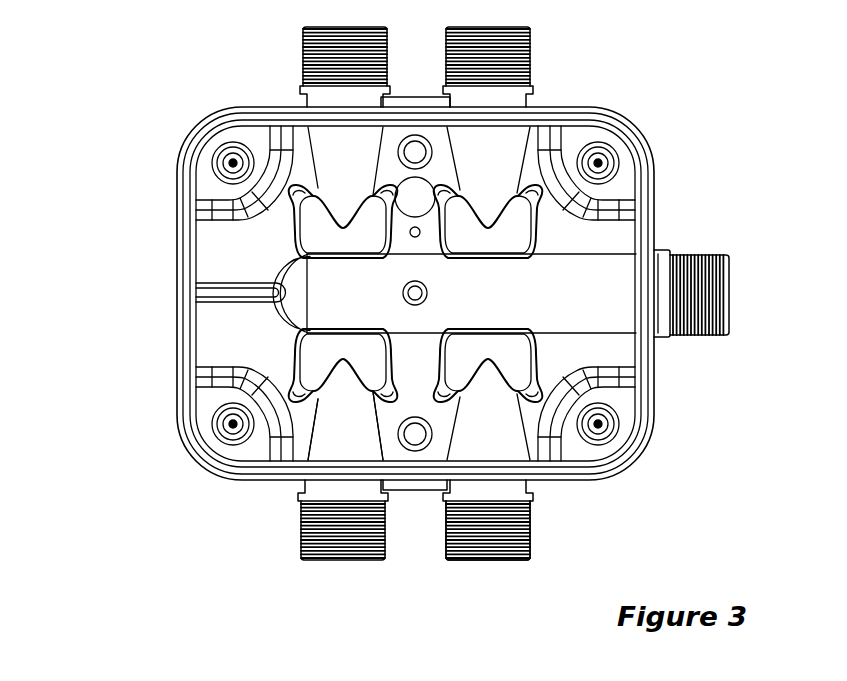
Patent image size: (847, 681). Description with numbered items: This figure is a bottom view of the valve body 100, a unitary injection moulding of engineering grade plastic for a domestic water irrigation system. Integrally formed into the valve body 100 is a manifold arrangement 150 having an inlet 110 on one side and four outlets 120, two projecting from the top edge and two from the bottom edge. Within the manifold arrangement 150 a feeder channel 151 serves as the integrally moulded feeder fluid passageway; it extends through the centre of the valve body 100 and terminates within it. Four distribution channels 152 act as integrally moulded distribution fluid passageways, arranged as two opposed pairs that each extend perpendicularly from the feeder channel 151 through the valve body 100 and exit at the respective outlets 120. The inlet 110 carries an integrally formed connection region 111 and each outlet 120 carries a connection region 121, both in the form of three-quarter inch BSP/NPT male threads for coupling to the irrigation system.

The valve body 100 is at (140, 138).
The inlet 110 is at (732, 283).
The connection region 111 is at (693, 337).
The outlets 120 is at (345, 24).
The connection regions 121 is at (530, 522).
The manifold arrangement 150 is at (322, 225).
The feeder channel 151 is at (318, 293).
The distribution channels 152 is at (330, 422).